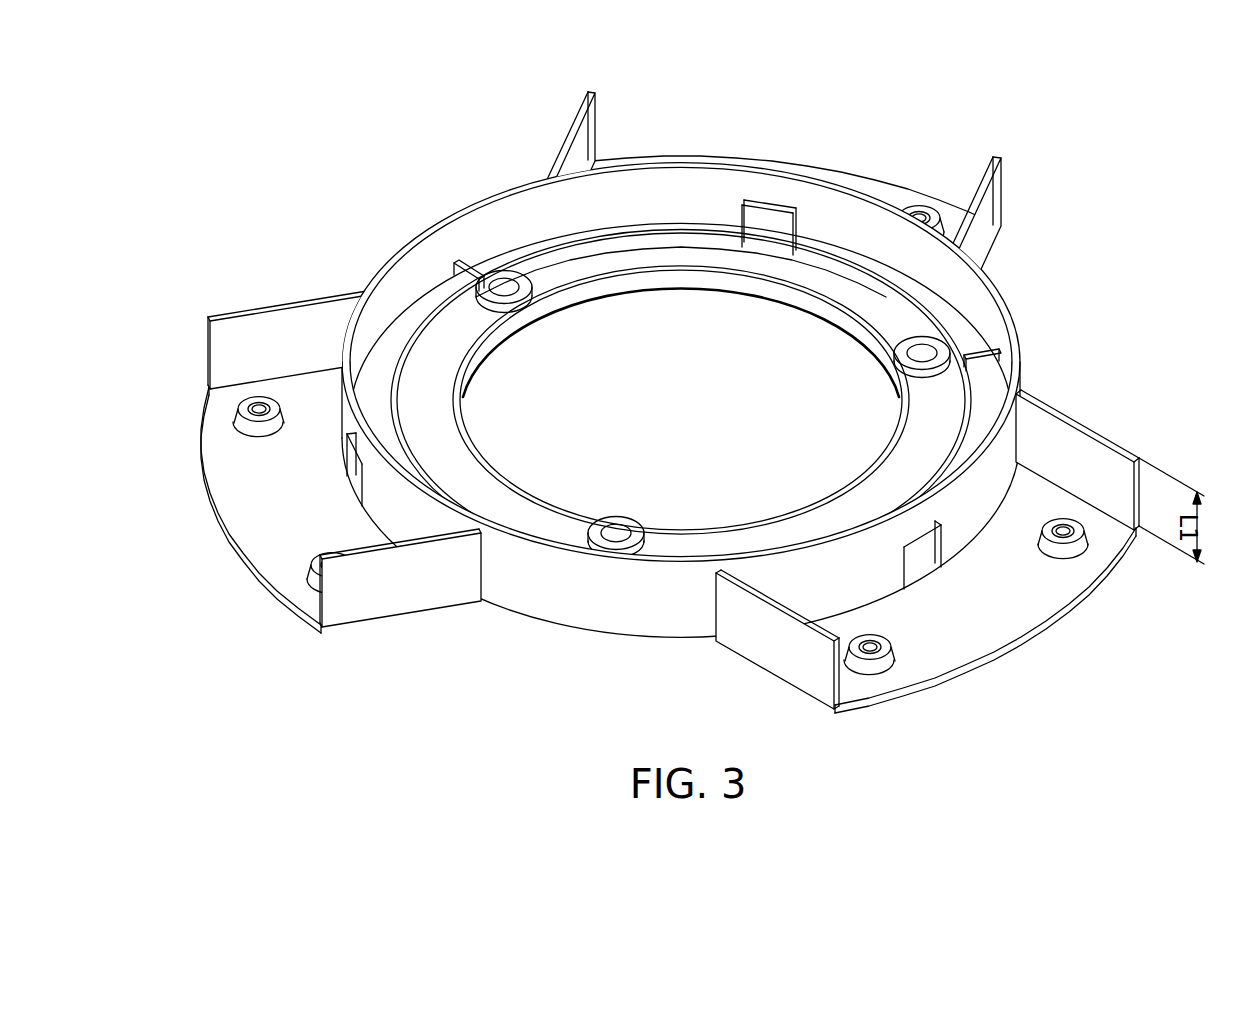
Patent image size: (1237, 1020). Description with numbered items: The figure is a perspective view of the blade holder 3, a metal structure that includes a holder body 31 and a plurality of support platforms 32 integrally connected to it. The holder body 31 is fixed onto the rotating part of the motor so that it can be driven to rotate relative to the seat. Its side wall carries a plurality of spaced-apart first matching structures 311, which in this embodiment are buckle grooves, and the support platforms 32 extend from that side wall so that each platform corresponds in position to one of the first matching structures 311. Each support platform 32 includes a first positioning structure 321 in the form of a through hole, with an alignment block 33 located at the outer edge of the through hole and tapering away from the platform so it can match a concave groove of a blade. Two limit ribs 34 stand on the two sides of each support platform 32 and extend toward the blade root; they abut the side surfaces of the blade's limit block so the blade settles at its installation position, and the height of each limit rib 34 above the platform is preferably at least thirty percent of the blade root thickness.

The blade holder 3 is at (667, 425).
The holder body 31 is at (990, 318).
The support platform 32 is at (835, 175).
The alignment block 33 is at (936, 220).
The limit rib 34 is at (578, 150).
The first matching structure 311 is at (768, 214).
The first positioning structure 321 is at (930, 212).